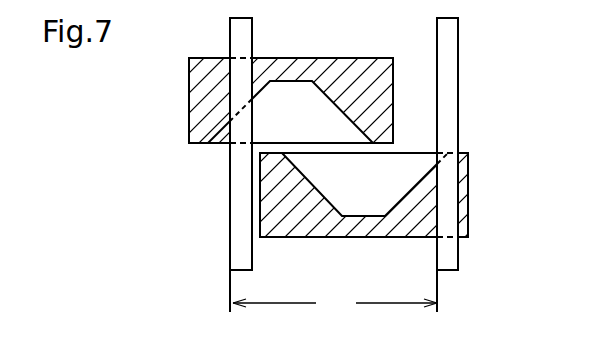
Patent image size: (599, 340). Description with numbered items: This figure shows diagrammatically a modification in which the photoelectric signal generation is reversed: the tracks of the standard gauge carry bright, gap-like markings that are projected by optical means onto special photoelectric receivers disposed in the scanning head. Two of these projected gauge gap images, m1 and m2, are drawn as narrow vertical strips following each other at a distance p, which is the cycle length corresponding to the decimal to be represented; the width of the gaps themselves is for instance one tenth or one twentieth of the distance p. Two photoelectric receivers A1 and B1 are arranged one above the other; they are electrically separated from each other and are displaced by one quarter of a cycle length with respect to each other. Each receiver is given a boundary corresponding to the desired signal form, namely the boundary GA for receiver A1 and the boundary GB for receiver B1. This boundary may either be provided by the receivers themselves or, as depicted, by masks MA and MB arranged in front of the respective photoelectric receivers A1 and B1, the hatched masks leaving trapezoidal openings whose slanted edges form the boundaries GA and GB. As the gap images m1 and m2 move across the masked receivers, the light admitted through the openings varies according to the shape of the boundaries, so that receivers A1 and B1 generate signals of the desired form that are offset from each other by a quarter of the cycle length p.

The mask MA is at (203, 96).
The mask MB is at (462, 185).
The photoelectric receiver A1 is at (302, 90).
The photoelectric receiver B1 is at (362, 198).
The boundary GA is at (222, 136).
The boundary GB is at (430, 170).
The gauge gap image m1 is at (240, 208).
The gauge gap image m2 is at (445, 65).
The distance p is at (335, 300).